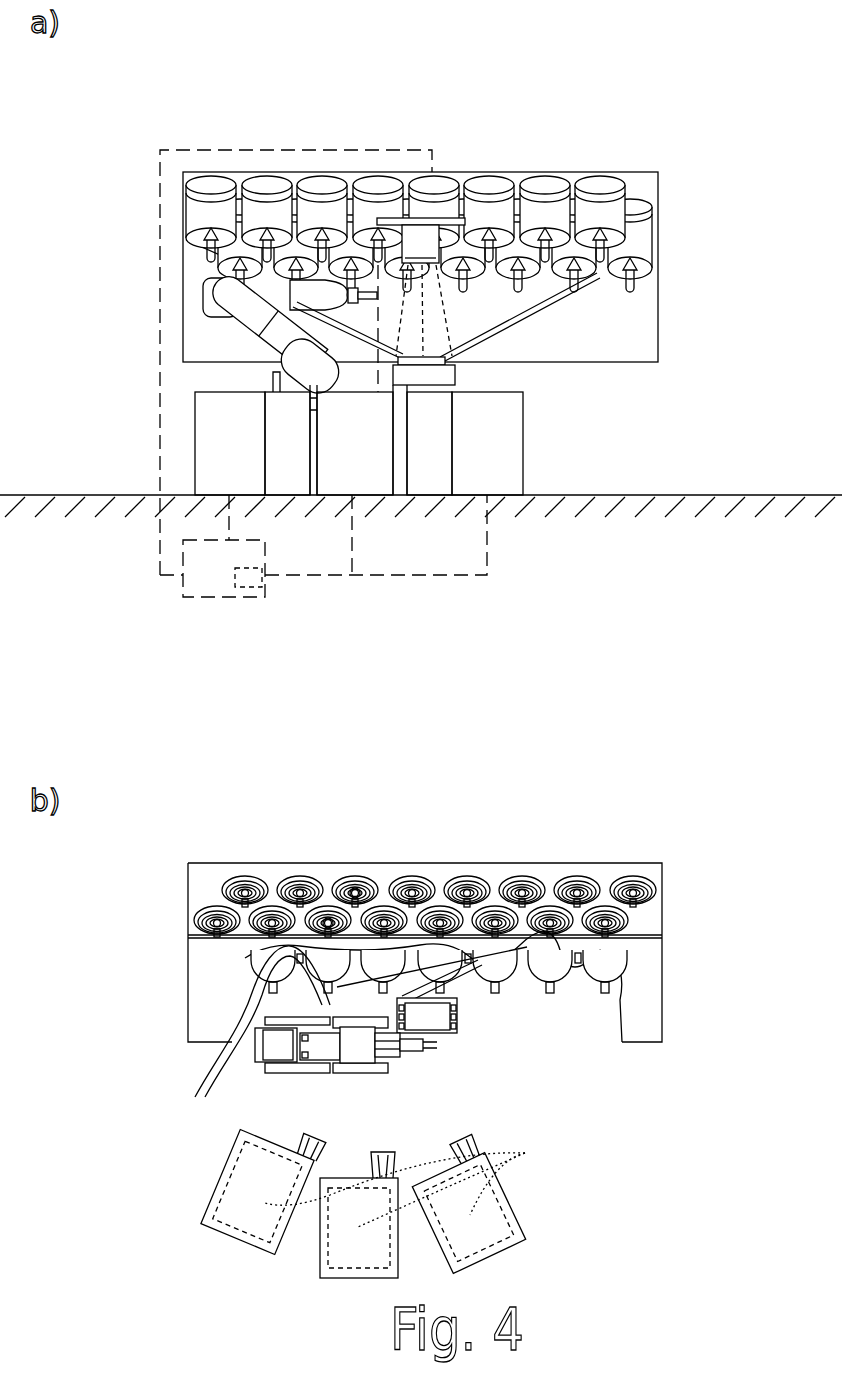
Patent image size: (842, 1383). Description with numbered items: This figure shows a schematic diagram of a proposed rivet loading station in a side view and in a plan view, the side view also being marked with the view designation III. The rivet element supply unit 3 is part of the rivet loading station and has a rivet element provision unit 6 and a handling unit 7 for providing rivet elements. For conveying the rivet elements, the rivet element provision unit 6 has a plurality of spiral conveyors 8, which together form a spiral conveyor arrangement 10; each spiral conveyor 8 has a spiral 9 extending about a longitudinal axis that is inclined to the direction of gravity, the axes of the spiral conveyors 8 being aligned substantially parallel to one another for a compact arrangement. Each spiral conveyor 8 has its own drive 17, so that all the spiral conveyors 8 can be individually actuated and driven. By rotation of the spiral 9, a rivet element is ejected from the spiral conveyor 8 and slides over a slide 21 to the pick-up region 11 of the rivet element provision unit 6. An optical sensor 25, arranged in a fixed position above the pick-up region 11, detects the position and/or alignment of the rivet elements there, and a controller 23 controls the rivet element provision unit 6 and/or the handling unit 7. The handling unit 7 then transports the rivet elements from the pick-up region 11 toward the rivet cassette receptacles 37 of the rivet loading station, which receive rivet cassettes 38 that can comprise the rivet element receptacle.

The rivet element supply unit 3 is at (378, 112).
The rivet element provision unit 6 is at (193, 162).
The handling unit 7 is at (250, 380).
The spiral conveyor 8 is at (318, 163).
The spiral 9 is at (325, 912).
The spiral conveyor arrangement 10 is at (180, 805).
The pick-up region 11 is at (468, 375).
The drive 17 is at (267, 133).
The slide 21 is at (487, 300).
The controller 23 is at (217, 594).
The optical sensor 25 is at (435, 245).
The rivet cassette receptacle 37 is at (437, 447).
The rivet cassette 38 is at (525, 1153).
The detail view III is at (512, 95).